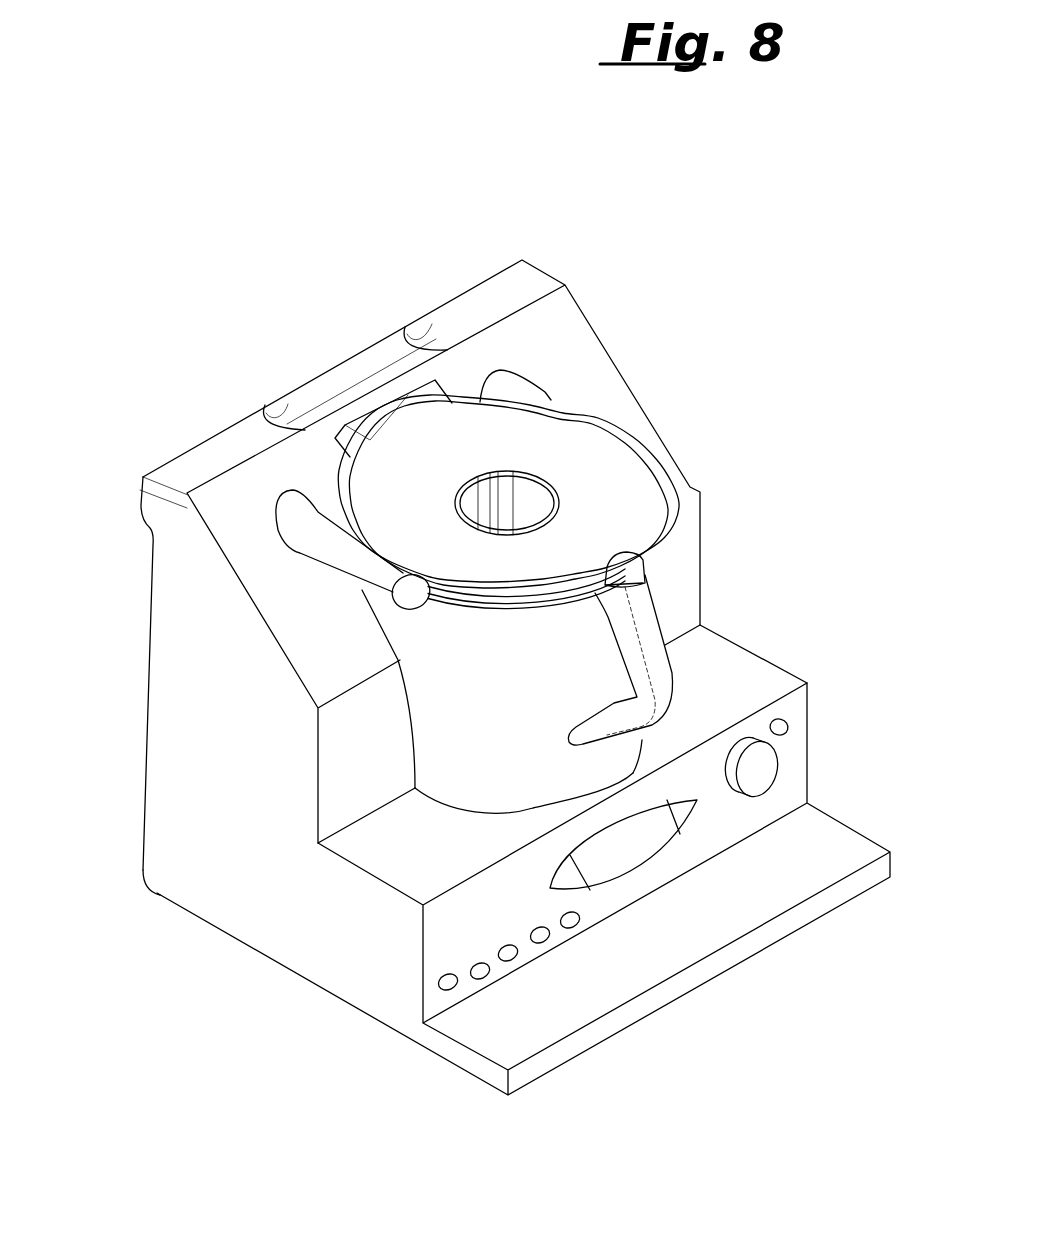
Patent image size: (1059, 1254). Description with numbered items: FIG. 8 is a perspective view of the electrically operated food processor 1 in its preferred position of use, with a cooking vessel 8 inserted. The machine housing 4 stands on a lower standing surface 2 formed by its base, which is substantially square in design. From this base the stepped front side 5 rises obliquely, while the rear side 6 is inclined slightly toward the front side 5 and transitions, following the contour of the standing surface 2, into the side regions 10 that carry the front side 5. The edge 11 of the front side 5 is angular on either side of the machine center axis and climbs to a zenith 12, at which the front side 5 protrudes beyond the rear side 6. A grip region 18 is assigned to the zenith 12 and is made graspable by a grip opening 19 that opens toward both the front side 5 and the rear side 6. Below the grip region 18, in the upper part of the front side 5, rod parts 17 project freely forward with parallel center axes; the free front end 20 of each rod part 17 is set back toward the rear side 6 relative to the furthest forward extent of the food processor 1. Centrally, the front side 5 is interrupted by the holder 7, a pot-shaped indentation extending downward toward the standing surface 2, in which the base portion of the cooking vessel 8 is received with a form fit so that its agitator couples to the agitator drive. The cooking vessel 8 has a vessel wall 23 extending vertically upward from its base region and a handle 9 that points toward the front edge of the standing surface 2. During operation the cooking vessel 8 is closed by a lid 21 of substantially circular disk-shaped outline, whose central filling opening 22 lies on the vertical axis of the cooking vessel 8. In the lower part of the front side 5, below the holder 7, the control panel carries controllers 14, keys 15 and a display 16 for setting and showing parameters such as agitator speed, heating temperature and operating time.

The food processor 1 is at (673, 306).
The standing surface 2 is at (338, 1000).
The machine housing 4 is at (150, 722).
The front side 5 is at (660, 572).
The rear side 6 is at (150, 618).
The holder 7 is at (577, 565).
The cooking vessel 8 is at (597, 640).
The handle 9 is at (652, 665).
The side regions 10 is at (220, 903).
The edge 11 is at (740, 643).
The zenith 12 is at (297, 397).
The controllers 14 is at (757, 772).
The keys 15 is at (541, 940).
The display 16 is at (613, 863).
The rod parts 17 is at (556, 373).
The grip region 18 is at (335, 350).
The grip opening 19 is at (400, 410).
The free front end 20 is at (400, 603).
The lid 21 is at (633, 481).
The filling opening 22 is at (517, 503).
The vessel wall 23 is at (513, 717).